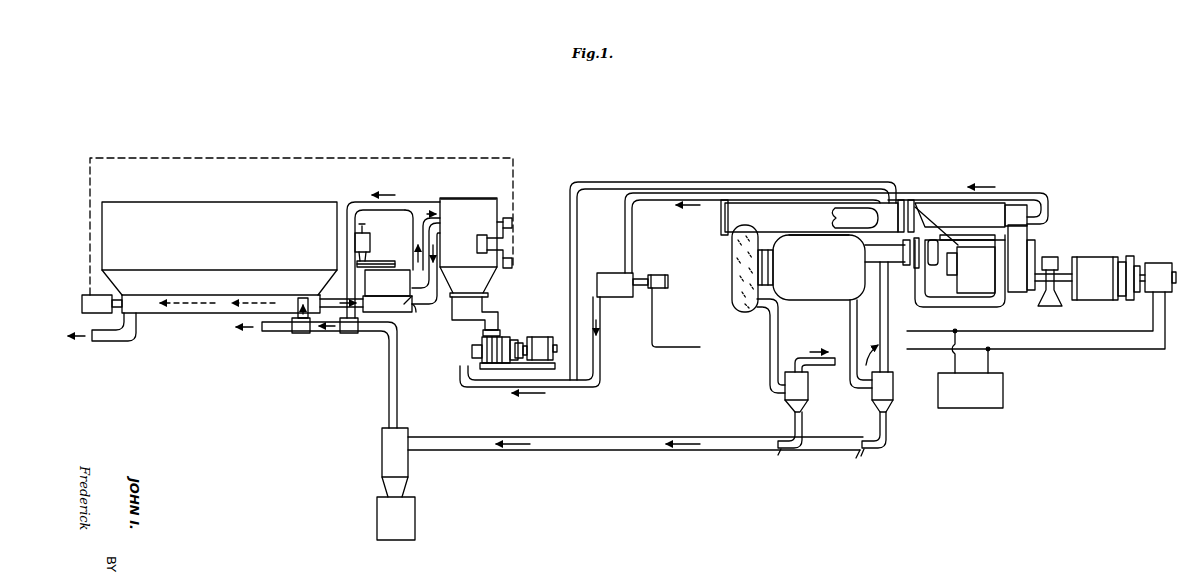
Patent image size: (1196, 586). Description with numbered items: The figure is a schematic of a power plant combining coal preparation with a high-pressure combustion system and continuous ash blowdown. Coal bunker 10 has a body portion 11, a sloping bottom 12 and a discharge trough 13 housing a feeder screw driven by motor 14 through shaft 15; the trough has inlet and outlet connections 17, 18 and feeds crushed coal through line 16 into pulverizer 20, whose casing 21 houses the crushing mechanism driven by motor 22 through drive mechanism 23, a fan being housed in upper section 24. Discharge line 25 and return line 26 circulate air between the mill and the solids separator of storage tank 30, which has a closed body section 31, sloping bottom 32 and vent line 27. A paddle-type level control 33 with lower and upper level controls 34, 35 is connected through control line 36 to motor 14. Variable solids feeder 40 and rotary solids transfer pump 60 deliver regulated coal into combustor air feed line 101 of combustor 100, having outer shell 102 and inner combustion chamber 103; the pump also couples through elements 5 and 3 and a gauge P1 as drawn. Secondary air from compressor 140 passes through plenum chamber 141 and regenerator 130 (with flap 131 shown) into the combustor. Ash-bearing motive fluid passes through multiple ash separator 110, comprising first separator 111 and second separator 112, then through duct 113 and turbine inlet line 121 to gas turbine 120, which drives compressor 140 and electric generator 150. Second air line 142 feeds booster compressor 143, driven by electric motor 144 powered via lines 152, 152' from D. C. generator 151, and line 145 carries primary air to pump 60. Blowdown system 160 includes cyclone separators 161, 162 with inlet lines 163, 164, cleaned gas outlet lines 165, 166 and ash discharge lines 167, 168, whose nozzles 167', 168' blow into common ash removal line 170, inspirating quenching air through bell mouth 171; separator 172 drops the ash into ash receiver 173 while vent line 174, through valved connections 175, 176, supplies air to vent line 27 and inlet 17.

The motor 3 is at (541, 337).
The coupling 5 is at (519, 342).
The coal bunker 10 is at (219, 236).
The body portion 11 is at (219, 272).
The sloping bottom 12 is at (221, 285).
The discharge trough 13 is at (215, 310).
The motor 14 is at (82, 302).
The shaft 15 is at (114, 306).
The line 16 is at (333, 309).
The inlet connection 17 is at (303, 297).
The outlet connection 18 is at (112, 336).
The pulverizer 20 is at (387, 291).
The casing 21 is at (436, 297).
The motor 22 is at (363, 236).
The drive mechanism 23 is at (378, 260).
The upper section 24 is at (400, 298).
The discharge line 25 is at (413, 228).
The return line 26 is at (438, 302).
The vent line 27 is at (355, 203).
The storage tank 30 is at (468, 232).
The closed body section 31 is at (468, 218).
The sloping bottom 32 is at (468, 282).
The level control 33 is at (477, 247).
The lower level control 34 is at (512, 264).
The upper level control 35 is at (512, 223).
The control line 36 is at (89, 249).
The variable solids feeder 40 is at (475, 303).
The rotary solids transfer pump 60 is at (468, 351).
The combustor 100 is at (811, 217).
The combustor air feed line 101 is at (616, 176).
The outer shell 102 is at (722, 220).
The inner combustion chamber 103 is at (855, 218).
The multiple ash separator 110 is at (811, 267).
The first ash separator 111 is at (732, 270).
The second ash separator 112 is at (821, 252).
The duct 113 is at (892, 253).
The gas turbine 120 is at (965, 266).
The turbine inlet line 121 is at (944, 306).
The regenerator 130 is at (951, 216).
The flap 131 is at (925, 210).
The secondary air compressor 140 is at (1032, 268).
The plenum chamber 141 is at (1010, 208).
The second air line 142 is at (624, 232).
The booster compressor 143 is at (622, 298).
The electric motor 144 is at (659, 275).
The line 145 is at (601, 372).
The electric generator 150 is at (1108, 278).
The D. C. generator 151 is at (1170, 256).
The line 152 is at (1036, 350).
The electric lead 152' is at (676, 317).
The ash blowdown system 160 is at (832, 396).
The first separator 161 is at (785, 392).
The second separator 162 is at (893, 384).
The inlet line 163 is at (779, 335).
The inlet line 164 is at (850, 313).
The cleaned gas outlet line 165 is at (828, 357).
The cleaned gas outlet line 166 is at (889, 323).
The ash discharge line 167 is at (809, 430).
The discharge nozzle 167' is at (795, 464).
The ash discharge line 168 is at (892, 430).
The discharge nozzle 168' is at (889, 456).
The common ash removal line 170 is at (672, 453).
The bell mouth 171 is at (858, 455).
The separator 172 is at (383, 452).
The ash receiver 173 is at (400, 515).
The vent line 174 is at (258, 330).
The valved connection 175 is at (349, 334).
The valved connection 176 is at (299, 334).
The pressure gauge P1 is at (1049, 254).